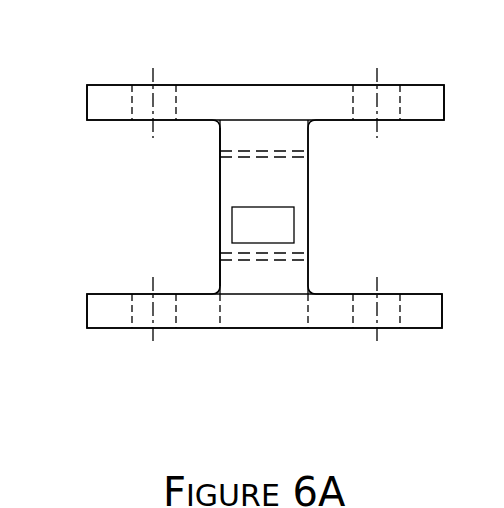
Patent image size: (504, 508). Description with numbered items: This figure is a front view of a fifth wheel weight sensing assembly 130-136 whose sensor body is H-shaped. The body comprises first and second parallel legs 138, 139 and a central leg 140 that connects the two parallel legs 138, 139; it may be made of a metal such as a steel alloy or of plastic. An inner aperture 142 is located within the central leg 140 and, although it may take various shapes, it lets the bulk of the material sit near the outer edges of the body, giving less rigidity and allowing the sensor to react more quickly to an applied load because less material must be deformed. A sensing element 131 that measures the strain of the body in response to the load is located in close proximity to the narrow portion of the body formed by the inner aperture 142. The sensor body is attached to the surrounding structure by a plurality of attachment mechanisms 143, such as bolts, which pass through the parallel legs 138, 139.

The weight sensing assembly 130-136 is at (158, 247).
The sensing element 131 is at (263, 225).
The first parallel leg 138 is at (103, 88).
The second parallel leg 139 is at (458, 283).
The central leg 140 is at (253, 300).
The inner aperture 142 is at (198, 213).
The attachment mechanisms 143 is at (137, 87).